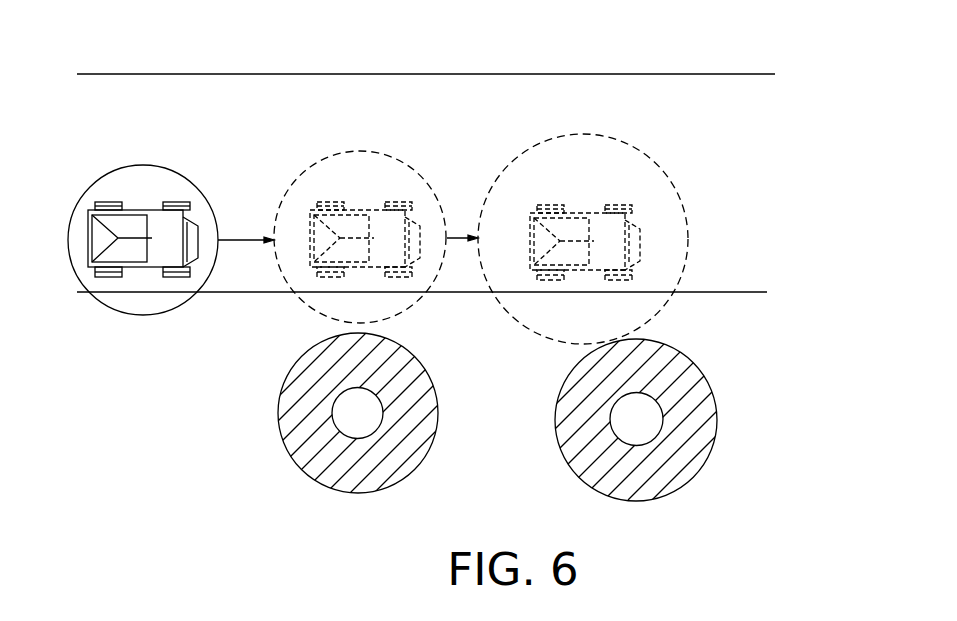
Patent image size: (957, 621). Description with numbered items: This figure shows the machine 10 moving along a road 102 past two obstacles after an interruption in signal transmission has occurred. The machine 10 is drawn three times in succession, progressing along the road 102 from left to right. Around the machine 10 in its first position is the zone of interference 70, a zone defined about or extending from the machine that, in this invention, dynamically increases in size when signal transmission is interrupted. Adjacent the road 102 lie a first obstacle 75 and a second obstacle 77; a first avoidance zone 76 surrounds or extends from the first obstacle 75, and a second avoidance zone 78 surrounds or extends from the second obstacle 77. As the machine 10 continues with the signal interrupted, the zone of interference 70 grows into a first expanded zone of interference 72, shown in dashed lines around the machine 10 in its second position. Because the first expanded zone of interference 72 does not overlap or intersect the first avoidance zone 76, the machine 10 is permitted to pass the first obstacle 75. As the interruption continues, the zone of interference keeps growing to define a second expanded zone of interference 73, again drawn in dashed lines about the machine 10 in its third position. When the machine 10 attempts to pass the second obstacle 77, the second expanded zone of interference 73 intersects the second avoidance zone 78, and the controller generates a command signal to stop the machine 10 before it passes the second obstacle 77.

The machine 10 is at (135, 212).
The zone of interference 70 is at (156, 165).
The first expanded zone of interference 72 is at (420, 172).
The second expanded zone of interference 73 is at (623, 142).
The first obstacle 75 is at (380, 390).
The first avoidance zone 76 is at (415, 460).
The second obstacle 77 is at (660, 395).
The second avoidance zone 78 is at (700, 468).
The road 102 is at (140, 108).